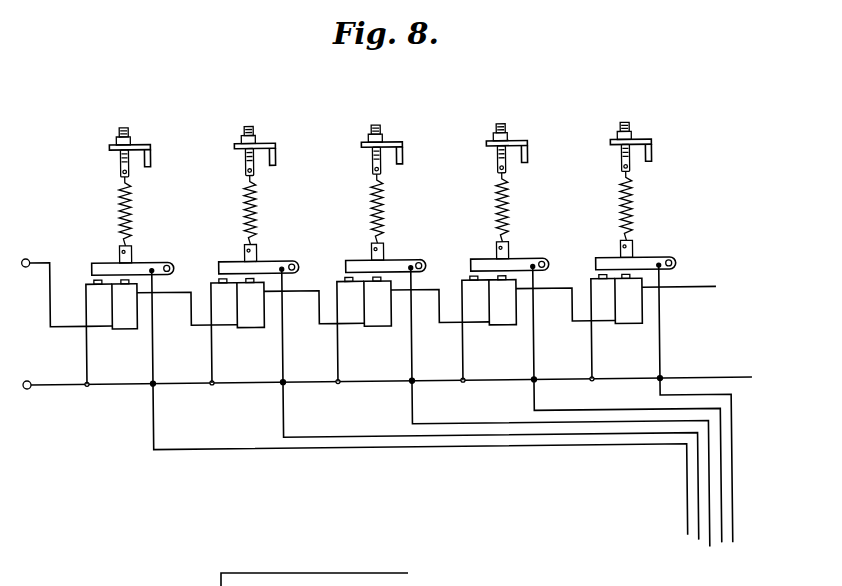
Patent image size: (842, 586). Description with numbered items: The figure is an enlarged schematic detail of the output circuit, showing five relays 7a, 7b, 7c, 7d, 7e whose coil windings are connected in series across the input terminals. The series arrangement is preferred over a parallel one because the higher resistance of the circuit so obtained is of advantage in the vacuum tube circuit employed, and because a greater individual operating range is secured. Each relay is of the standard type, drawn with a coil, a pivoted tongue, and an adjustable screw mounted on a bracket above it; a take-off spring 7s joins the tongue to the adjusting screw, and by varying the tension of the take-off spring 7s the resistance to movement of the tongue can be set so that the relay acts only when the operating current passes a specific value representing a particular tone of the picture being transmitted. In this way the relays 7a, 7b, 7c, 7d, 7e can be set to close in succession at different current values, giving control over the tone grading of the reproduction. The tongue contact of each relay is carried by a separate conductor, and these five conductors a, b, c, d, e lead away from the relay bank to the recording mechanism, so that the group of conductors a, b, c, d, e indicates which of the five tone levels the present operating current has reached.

The relay 7a is at (120, 323).
The relay 7b is at (245, 323).
The relay 7c is at (372, 323).
The relay 7d is at (497, 323).
The relay 7e is at (623, 323).
The take-off spring 7s is at (246, 222).
The wire a is at (686, 520).
The wire b is at (697, 542).
The wire c is at (708, 549).
The wire d is at (720, 546).
The wire e is at (731, 546).